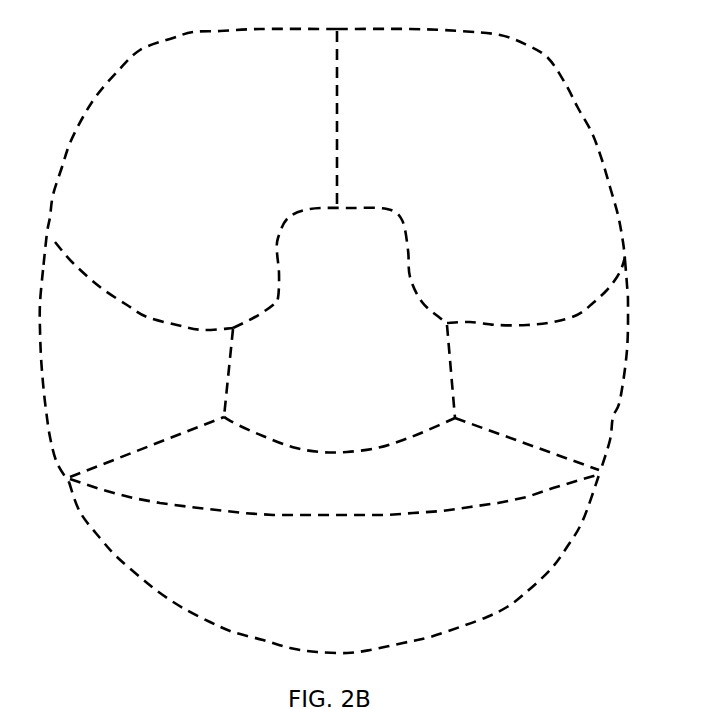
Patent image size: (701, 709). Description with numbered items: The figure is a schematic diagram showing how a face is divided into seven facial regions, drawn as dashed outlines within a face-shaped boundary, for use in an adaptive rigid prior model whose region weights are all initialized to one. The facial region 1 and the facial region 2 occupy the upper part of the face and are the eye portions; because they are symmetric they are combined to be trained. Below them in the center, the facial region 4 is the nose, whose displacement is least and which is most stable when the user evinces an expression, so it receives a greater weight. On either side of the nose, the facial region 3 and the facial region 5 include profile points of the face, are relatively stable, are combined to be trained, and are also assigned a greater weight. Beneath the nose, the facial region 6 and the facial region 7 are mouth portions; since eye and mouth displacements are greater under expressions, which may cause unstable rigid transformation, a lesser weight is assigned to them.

The facial region 1 is at (190, 179).
The facial region 2 is at (481, 177).
The facial region 3 is at (136, 376).
The facial region 4 is at (340, 293).
The facial region 5 is at (537, 366).
The facial region 6 is at (335, 466).
The facial region 7 is at (334, 562).